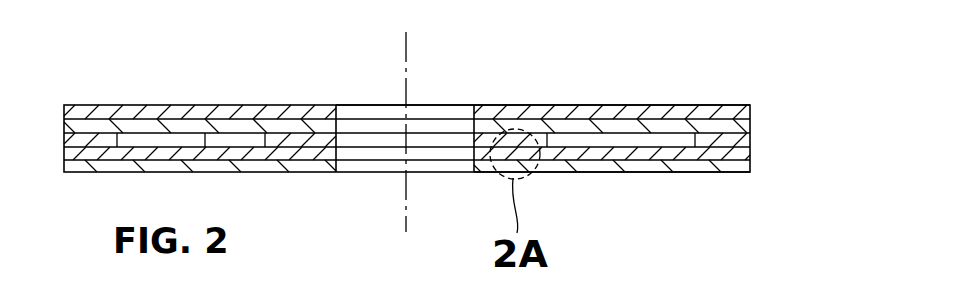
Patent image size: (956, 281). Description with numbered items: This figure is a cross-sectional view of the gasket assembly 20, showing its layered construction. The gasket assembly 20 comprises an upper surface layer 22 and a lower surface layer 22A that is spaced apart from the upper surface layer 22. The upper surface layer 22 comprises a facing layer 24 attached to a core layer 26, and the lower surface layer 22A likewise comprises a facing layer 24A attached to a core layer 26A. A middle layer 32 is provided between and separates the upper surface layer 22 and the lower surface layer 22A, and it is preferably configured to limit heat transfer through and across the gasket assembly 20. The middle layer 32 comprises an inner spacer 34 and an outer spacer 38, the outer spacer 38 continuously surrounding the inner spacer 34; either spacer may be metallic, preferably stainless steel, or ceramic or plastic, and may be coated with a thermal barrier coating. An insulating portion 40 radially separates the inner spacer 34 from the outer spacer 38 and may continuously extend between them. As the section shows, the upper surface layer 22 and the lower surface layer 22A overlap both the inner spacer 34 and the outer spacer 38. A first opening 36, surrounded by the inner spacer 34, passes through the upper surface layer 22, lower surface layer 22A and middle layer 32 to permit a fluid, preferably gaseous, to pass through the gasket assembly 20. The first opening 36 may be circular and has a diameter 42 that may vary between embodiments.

The gasket assembly 20 is at (118, 72).
The upper surface layer 22 is at (620, 105).
The lower surface layer 22A is at (625, 173).
The facing layer 24 is at (750, 108).
The facing layer 24A is at (757, 170).
The core layer 26 is at (752, 125).
The core layer 26A is at (752, 150).
The middle layer 32 is at (752, 129).
The inner spacer 34 is at (290, 138).
The first opening 36 is at (365, 140).
The outer spacer 38 is at (97, 136).
The insulating portion 40 is at (205, 148).
The diameter 42 is at (337, 140).